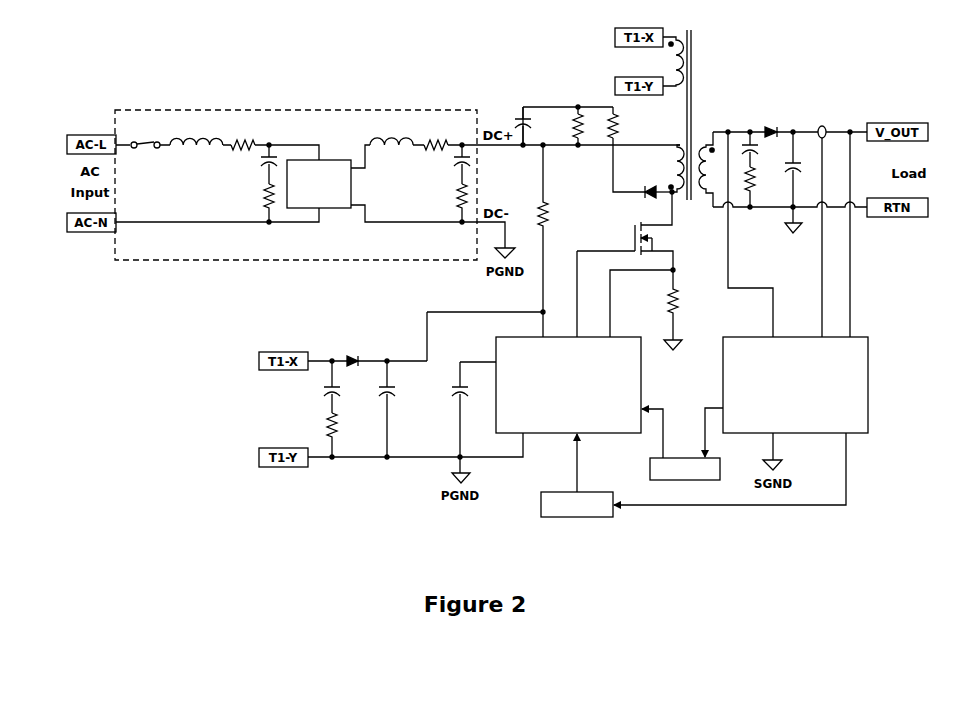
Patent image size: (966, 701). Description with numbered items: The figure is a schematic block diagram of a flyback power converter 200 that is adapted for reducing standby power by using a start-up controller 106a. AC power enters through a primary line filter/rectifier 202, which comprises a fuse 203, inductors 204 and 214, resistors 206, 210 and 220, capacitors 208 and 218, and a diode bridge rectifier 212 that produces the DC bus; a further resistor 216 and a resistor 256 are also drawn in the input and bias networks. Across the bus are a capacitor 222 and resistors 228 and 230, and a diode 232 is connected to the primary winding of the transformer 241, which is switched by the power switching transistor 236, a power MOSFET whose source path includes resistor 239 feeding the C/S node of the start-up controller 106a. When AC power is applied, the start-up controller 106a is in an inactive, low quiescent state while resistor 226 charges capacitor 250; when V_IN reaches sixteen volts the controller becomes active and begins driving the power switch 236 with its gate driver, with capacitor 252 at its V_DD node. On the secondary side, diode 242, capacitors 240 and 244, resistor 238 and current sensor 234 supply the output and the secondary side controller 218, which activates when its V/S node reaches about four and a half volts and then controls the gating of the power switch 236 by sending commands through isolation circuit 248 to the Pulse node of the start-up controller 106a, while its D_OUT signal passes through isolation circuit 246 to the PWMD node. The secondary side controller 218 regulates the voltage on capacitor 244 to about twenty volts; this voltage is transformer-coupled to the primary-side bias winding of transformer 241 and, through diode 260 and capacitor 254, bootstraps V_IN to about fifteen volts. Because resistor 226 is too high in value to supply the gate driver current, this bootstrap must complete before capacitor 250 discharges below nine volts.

The flyback power converter 200 is at (192, 374).
The primary line filter/rectifier 202 is at (417, 109).
The fuse 203 is at (146, 150).
The inductor 204 is at (196, 146).
The resistor 206 is at (245, 141).
The capacitor 208 is at (261, 157).
The resistor 210 is at (263, 186).
The diode bridge rectifier 212 is at (325, 160).
The inductor 214 is at (389, 146).
The resistor 216 is at (438, 141).
The capacitor / secondary side controller 218 is at (454, 157).
The resistor 220 is at (456, 186).
The capacitor 222 is at (517, 123).
The resistor 226 is at (549, 207).
The resistor 228 is at (574, 128).
The resistor 230 is at (620, 123).
The diode 232 is at (649, 186).
The current sensor 234 is at (824, 125).
The power switching transistor 236 is at (633, 230).
The resistor 238 is at (765, 187).
The resistor 239 is at (670, 303).
The capacitor 240 is at (755, 152).
The transformer 241 is at (693, 66).
The diode 242 is at (772, 125).
The capacitor 244 is at (800, 169).
The isolation circuit 246 is at (566, 492).
The isolation circuit 248 is at (650, 467).
The capacitor 250 is at (394, 394).
The capacitor 252 is at (452, 398).
The capacitor 254 is at (340, 395).
The resistor 256 is at (327, 421).
The diode 260 is at (356, 354).
The start-up controller 106a is at (623, 336).